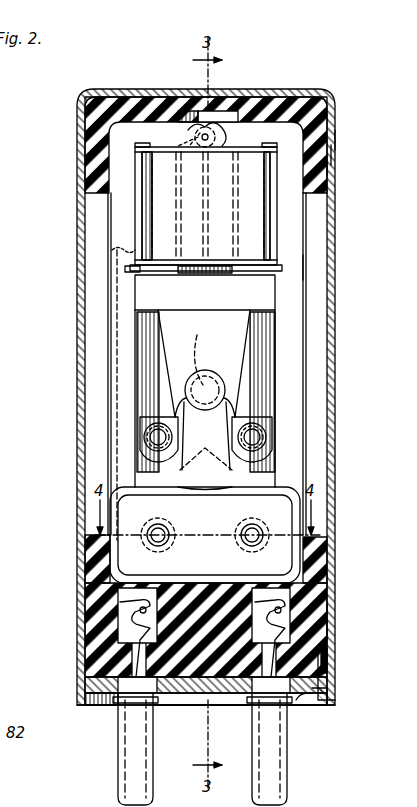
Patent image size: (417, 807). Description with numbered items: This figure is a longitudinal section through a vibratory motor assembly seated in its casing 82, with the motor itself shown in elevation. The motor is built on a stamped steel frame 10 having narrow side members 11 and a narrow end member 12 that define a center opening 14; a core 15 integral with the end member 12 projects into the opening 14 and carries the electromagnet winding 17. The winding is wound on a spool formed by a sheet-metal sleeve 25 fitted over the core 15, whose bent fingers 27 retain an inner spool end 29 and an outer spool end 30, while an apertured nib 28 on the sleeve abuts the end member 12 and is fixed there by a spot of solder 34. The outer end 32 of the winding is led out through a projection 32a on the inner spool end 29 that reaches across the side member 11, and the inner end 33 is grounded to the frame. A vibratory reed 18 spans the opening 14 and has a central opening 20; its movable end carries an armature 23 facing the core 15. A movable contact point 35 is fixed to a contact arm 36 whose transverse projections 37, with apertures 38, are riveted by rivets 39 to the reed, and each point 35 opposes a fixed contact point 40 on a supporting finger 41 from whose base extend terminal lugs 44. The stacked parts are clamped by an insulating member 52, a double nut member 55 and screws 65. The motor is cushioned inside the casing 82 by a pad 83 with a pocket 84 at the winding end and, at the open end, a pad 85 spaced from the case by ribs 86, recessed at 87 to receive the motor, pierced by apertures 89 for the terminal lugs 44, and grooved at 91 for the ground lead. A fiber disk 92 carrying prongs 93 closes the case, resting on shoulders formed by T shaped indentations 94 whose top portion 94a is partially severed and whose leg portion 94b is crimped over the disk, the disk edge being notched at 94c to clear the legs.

The frame 10 is at (303, 268).
The side members 11 is at (106, 366).
The end member 12 is at (278, 98).
The center opening 14 is at (290, 265).
The core 15 is at (208, 274).
The electromagnet winding 17 is at (250, 240).
The vibratory reed 18 is at (262, 338).
The central opening 20 is at (246, 347).
The armature 23 is at (278, 297).
The sleeve 25 is at (160, 220).
The fingers 27 is at (262, 148).
The apertured nib 28 is at (240, 110).
The inner spool end 29 is at (190, 266).
The outer spool end 30 is at (133, 150).
The outer end of the winding 32 is at (117, 330).
The projection 32a is at (112, 250).
The inner end of the winding 33 is at (202, 140).
The spot of solder 34 is at (197, 125).
The movable contact point 35 is at (197, 350).
The movable contact arm 36 is at (235, 416).
The projections 37 is at (272, 425).
The apertures 38 is at (152, 437).
The rivets 39 is at (160, 440).
The fixed contact point 40 is at (222, 384).
The supporting finger 41 is at (205, 460).
The terminal lugs 44 is at (318, 590).
The insulating member 52 is at (194, 487).
The double nut member 55 is at (118, 490).
The screws 65 is at (250, 530).
The casing layer 82 is at (331, 155).
The pad 83 is at (335, 140).
The pocket 84 is at (327, 165).
The pad 85 is at (332, 620).
The ribs 86 is at (322, 645).
The recess 87 is at (312, 552).
The apertures 89 is at (90, 650).
The radial groove 91 is at (186, 694).
The disk 92 is at (234, 695).
The prongs 93 is at (135, 738).
The T shaped indentations 94 is at (333, 673).
The top portion 94a is at (328, 660).
The leg portion 94b is at (330, 700).
The notches 94c is at (303, 700).